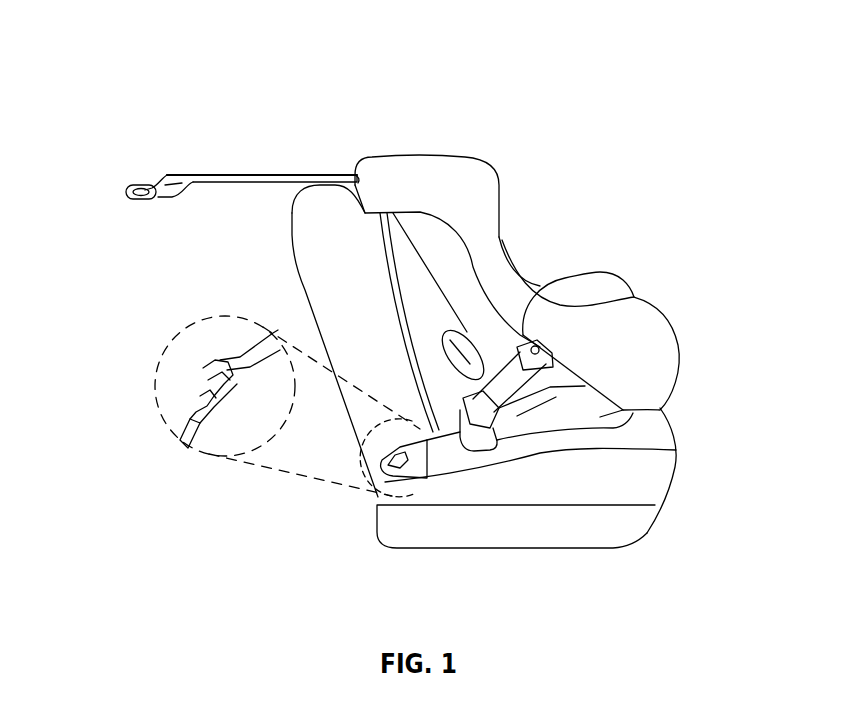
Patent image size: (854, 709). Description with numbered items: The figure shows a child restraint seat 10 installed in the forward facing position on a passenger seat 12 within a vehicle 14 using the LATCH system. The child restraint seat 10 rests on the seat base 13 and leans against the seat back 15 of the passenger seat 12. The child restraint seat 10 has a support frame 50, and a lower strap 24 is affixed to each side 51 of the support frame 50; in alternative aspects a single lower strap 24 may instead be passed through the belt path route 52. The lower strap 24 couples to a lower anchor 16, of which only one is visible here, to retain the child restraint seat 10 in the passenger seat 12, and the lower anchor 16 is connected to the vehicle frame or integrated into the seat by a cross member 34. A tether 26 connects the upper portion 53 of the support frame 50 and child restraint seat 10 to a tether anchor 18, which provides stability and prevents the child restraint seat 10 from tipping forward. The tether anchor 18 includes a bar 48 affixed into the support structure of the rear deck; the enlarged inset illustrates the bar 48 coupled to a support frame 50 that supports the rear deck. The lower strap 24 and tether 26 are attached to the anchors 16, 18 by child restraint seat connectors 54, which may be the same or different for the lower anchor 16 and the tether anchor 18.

The child restraint seat 10 is at (496, 182).
The passenger seat 12 is at (673, 455).
The seat base 13 is at (640, 477).
The vehicle 14 is at (184, 57).
The seat back 15 is at (317, 242).
The lower anchor 16 is at (227, 405).
The tether anchor 18 is at (127, 189).
The lower strap 24 is at (437, 420).
The tether 26 is at (219, 173).
The cross member 34 is at (197, 417).
The bar 48 is at (162, 181).
The support frame 50 is at (136, 198).
The side 51 is at (542, 300).
The belt path route 52 is at (445, 349).
The upper portion 53 is at (350, 168).
The child restraint seat connector 54 is at (277, 357).